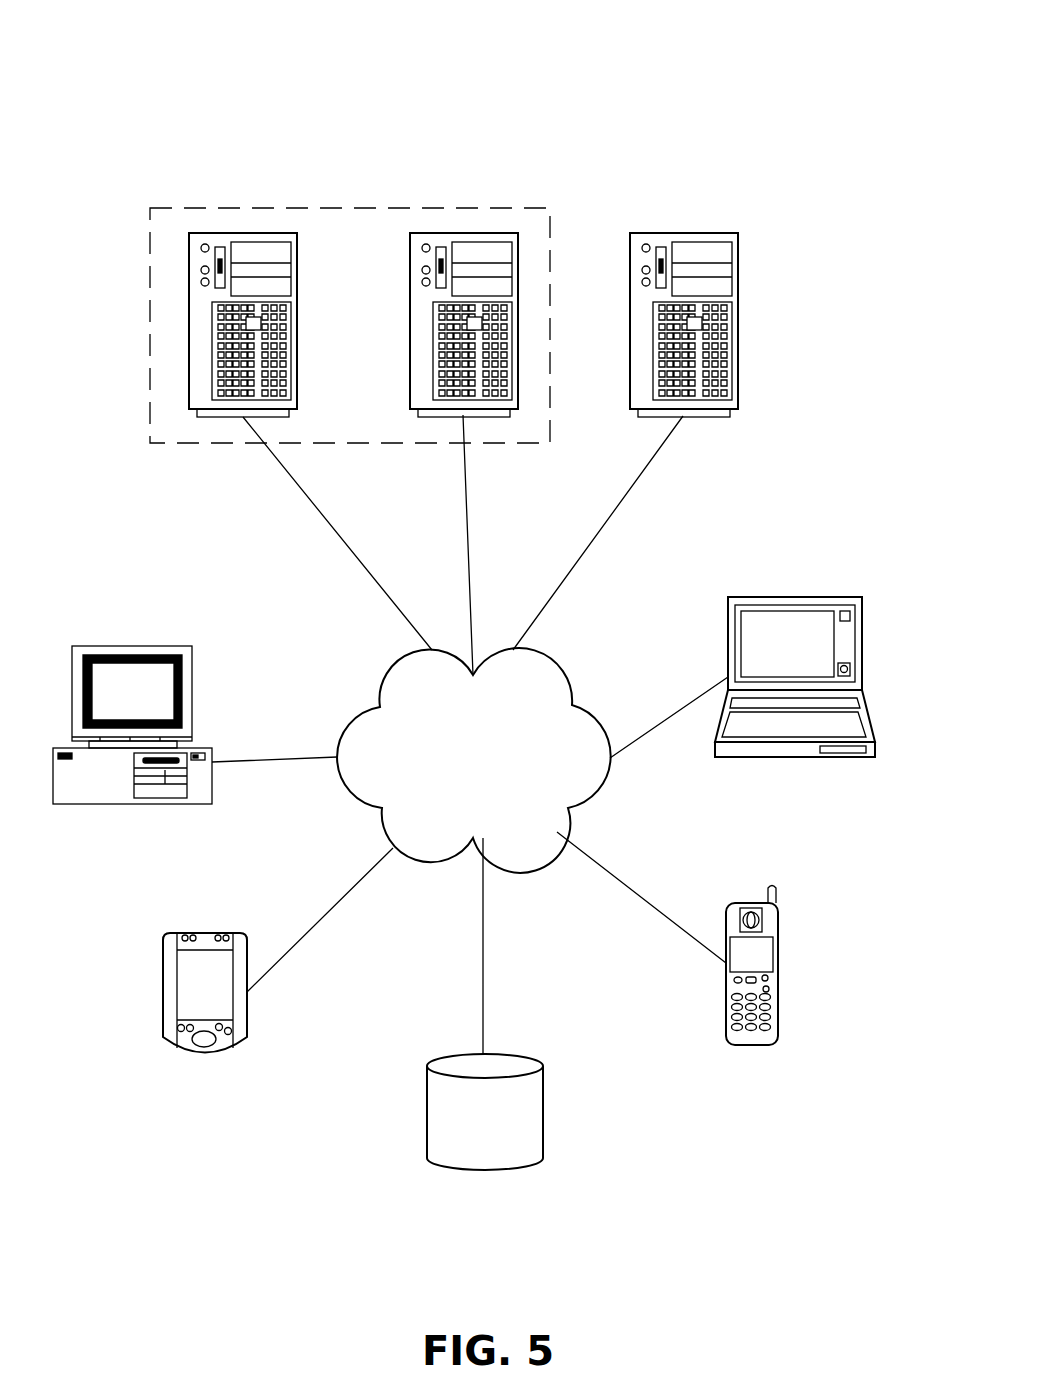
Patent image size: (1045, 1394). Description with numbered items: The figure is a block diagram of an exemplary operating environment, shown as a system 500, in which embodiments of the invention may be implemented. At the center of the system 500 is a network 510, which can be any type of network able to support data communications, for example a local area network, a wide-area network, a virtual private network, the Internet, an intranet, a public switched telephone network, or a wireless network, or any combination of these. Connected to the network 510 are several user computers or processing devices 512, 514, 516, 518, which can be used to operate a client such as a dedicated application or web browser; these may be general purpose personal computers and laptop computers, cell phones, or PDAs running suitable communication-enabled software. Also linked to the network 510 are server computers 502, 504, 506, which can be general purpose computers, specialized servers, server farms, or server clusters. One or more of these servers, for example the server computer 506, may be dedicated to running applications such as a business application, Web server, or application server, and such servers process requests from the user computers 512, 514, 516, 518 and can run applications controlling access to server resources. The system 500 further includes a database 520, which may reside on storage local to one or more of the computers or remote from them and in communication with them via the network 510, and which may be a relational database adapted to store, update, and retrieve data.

The system 500 is at (843, 110).
The server computer 502 is at (222, 233).
The server computer 504 is at (462, 233).
The server computer 506 is at (742, 318).
The network 510 is at (453, 806).
The user computer 512 is at (127, 645).
The user computer 514 is at (792, 597).
The user computer 516 is at (750, 1045).
The user computer 518 is at (205, 1056).
The database 520 is at (465, 1160).